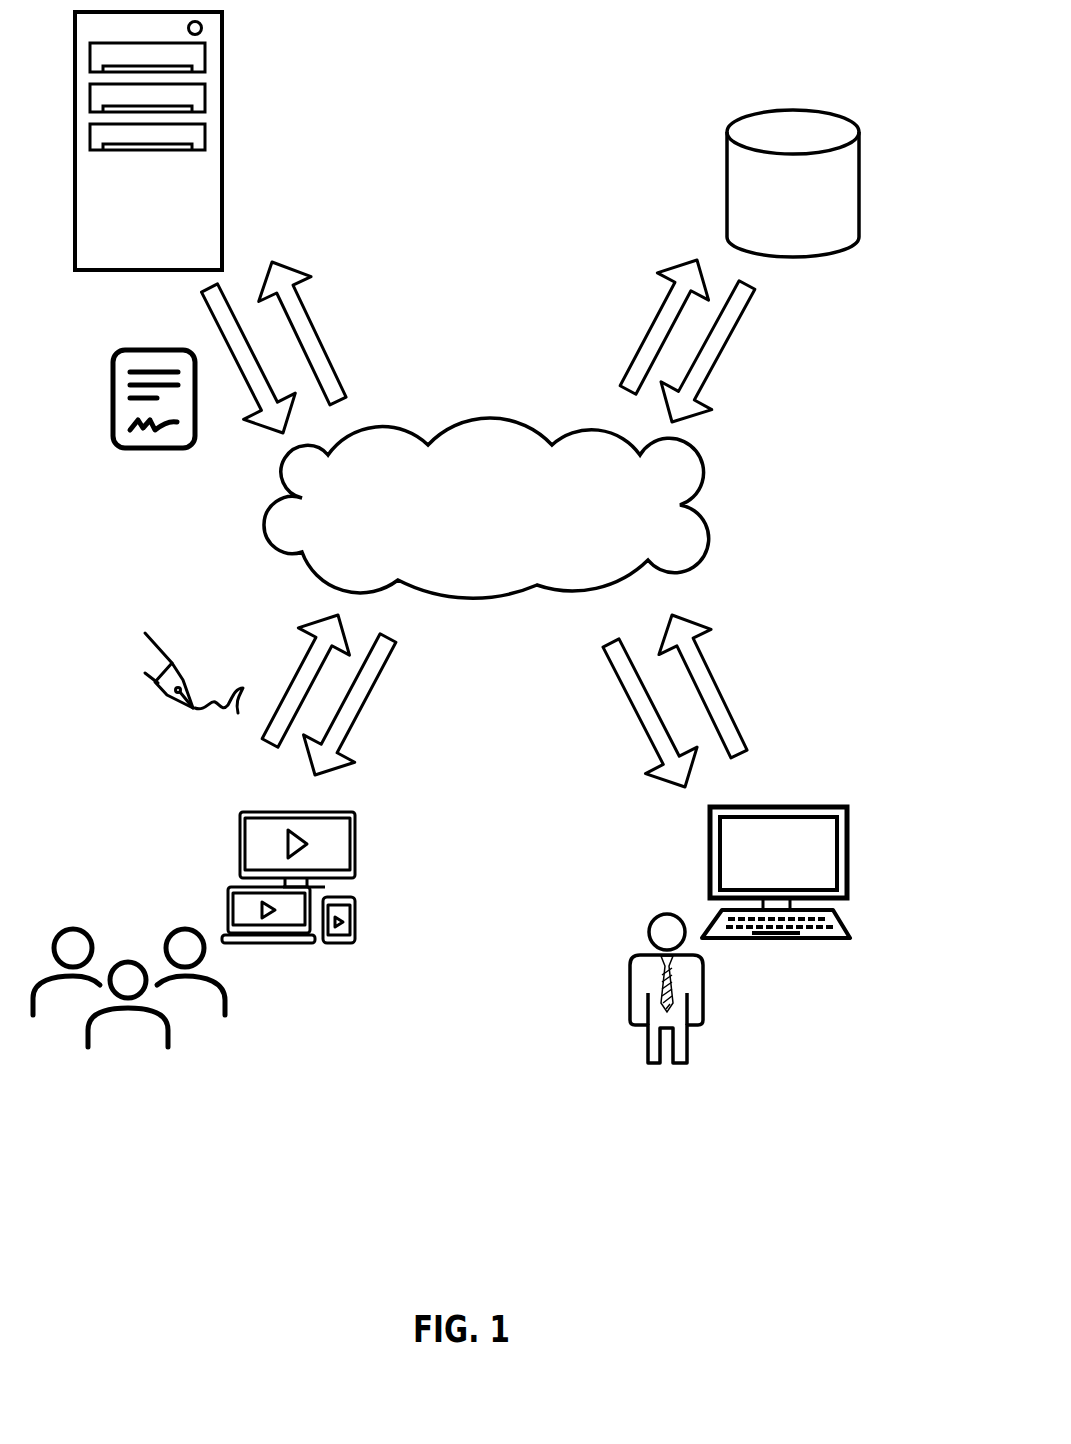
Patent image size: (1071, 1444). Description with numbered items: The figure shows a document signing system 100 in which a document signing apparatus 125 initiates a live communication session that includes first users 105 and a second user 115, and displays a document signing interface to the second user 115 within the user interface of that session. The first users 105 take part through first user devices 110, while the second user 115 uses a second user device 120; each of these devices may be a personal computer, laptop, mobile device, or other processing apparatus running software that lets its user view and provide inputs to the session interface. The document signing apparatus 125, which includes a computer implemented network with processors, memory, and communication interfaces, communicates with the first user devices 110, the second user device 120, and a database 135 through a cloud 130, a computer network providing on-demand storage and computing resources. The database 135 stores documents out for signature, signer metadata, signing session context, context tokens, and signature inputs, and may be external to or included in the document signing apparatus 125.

The document signing system 100 is at (452, 1105).
The first users 105 is at (228, 1000).
The first user devices 110 is at (238, 842).
The second user 115 is at (630, 998).
The second user device 120 is at (807, 942).
The document signing apparatus 125 is at (222, 130).
The cloud 130 is at (708, 533).
The database 135 is at (860, 188).